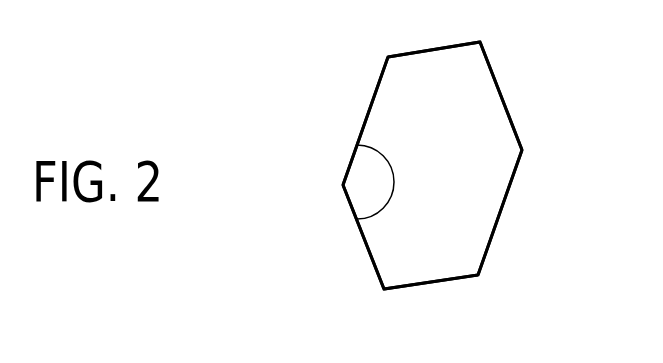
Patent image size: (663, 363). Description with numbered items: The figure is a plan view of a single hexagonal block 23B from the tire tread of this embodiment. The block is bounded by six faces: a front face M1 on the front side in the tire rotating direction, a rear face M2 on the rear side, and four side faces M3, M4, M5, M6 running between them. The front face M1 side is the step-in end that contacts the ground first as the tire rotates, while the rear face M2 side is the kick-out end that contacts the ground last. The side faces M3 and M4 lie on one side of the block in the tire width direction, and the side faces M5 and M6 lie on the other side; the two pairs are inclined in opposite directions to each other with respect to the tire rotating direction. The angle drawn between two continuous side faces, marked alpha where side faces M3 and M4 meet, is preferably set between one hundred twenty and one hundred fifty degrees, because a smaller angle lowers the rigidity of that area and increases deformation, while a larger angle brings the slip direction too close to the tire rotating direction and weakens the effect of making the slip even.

The hexagonal block 23B is at (398, 85).
The front face M1 is at (427, 50).
The rear face M2 is at (435, 282).
The side face M3 is at (362, 123).
The side face M4 is at (363, 242).
The side face M5 is at (500, 90).
The side face M6 is at (502, 218).